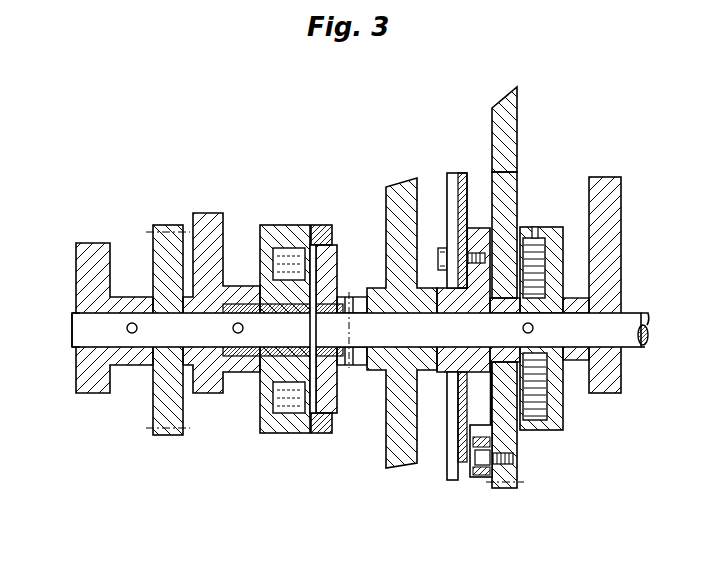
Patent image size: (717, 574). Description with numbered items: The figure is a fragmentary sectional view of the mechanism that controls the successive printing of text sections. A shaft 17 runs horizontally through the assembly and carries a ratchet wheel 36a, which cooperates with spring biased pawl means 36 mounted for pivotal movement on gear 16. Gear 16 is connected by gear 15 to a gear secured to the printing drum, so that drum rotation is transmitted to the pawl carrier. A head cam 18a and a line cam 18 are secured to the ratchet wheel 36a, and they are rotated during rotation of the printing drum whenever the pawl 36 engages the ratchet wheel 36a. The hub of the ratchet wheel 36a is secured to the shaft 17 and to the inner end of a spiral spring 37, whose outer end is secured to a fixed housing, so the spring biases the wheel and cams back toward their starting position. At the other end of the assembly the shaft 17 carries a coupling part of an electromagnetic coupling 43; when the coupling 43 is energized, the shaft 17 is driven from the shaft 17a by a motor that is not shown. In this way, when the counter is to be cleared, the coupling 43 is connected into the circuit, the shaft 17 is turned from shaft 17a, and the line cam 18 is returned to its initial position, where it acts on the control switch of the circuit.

The gear 15 is at (510, 128).
The gear 16 is at (490, 178).
The shaft 17 is at (640, 318).
The shaft 17a is at (79, 329).
The line cam 18 is at (462, 178).
The head cam 18a is at (451, 482).
The pawl means 36 is at (478, 480).
The ratchet wheel 36a is at (520, 432).
The spiral spring 37 is at (537, 257).
The electromagnetic coupling 43 is at (282, 227).